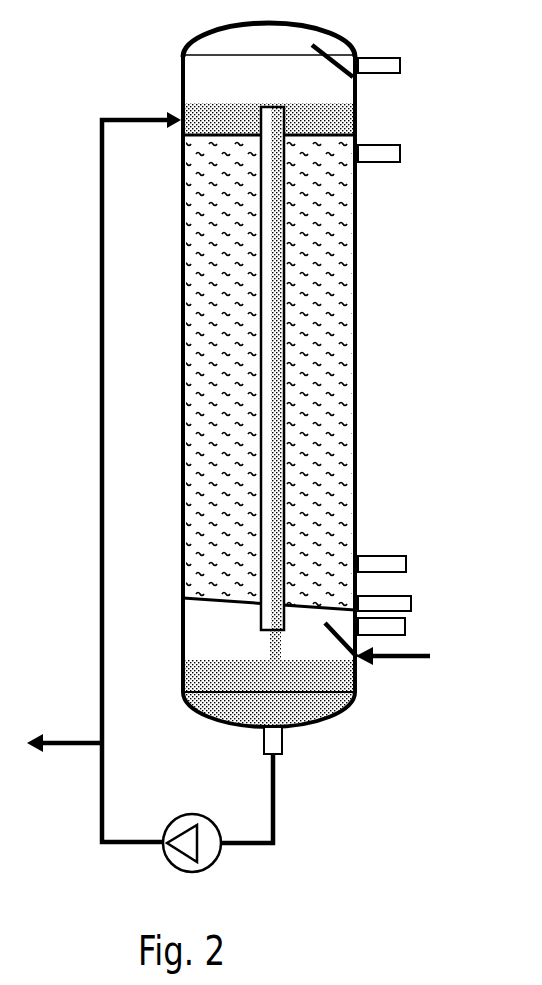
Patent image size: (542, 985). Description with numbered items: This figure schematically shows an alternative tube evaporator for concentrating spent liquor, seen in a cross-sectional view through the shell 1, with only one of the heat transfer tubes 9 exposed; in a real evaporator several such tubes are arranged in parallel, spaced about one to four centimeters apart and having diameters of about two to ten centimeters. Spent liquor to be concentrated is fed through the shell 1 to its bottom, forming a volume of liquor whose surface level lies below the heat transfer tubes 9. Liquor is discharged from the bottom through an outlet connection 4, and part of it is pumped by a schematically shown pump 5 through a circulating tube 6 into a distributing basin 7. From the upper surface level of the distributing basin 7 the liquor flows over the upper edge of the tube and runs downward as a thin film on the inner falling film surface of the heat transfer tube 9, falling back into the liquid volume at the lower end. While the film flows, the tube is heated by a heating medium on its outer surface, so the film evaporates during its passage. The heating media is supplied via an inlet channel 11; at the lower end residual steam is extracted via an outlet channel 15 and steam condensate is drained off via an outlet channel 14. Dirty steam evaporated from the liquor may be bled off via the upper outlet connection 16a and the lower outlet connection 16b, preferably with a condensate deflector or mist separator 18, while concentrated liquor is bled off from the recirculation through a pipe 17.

The shell 1 is at (357, 233).
The outlet connection 4 is at (272, 745).
The pump 5 is at (187, 815).
The circulating tube 6 is at (100, 430).
The distributing basin 7 is at (215, 118).
The heat transfer tube 9 is at (284, 318).
The inlet channel 11 is at (408, 159).
The outlet channel 14 is at (411, 603).
The outlet channel 15 is at (406, 564).
The upper outlet connection 16a is at (400, 66).
The lower outlet connection 16b is at (405, 627).
The pipe 17 is at (72, 742).
The condensate deflector/mist separator 18 is at (327, 48).